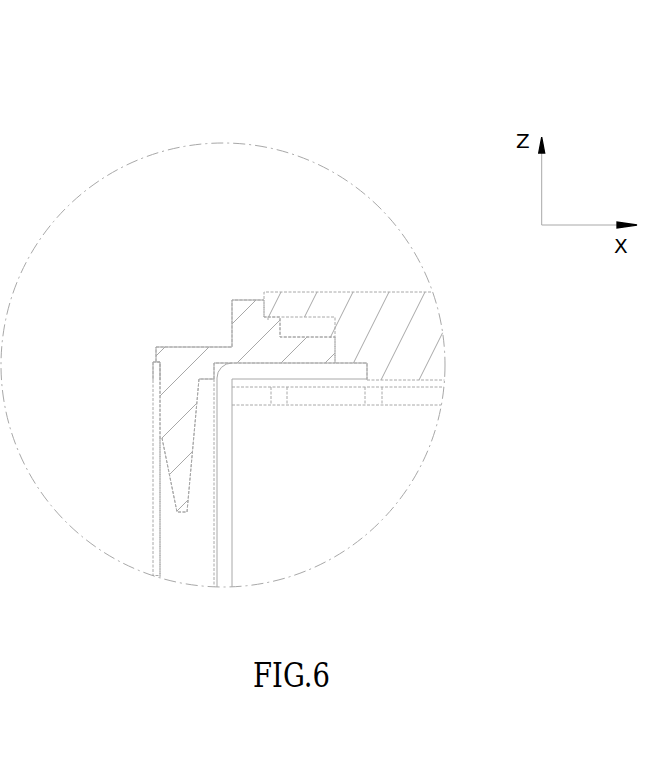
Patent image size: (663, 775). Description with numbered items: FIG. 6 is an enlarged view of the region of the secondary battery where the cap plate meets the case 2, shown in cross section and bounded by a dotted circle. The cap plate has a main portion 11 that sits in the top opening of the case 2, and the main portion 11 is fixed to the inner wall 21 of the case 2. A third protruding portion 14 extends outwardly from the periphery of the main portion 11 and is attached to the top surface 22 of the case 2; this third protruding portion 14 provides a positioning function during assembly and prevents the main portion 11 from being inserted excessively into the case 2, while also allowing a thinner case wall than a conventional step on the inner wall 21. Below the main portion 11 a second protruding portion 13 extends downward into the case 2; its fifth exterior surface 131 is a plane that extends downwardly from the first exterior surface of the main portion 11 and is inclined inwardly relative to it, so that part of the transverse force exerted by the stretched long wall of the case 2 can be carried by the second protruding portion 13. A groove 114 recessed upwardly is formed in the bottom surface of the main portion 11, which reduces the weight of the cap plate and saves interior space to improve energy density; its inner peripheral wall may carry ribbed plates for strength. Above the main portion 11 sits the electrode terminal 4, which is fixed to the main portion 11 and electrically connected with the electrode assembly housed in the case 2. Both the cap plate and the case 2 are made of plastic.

The case 2 is at (156, 519).
The electrode terminal 4 is at (372, 297).
The main portion 11 is at (173, 412).
The second protruding portion 13 is at (186, 473).
The third protruding portion 14 is at (156, 345).
The inner wall 21 is at (163, 514).
The top surface 22 is at (158, 363).
The groove 114 is at (328, 395).
The fifth exterior surface 131 is at (177, 488).